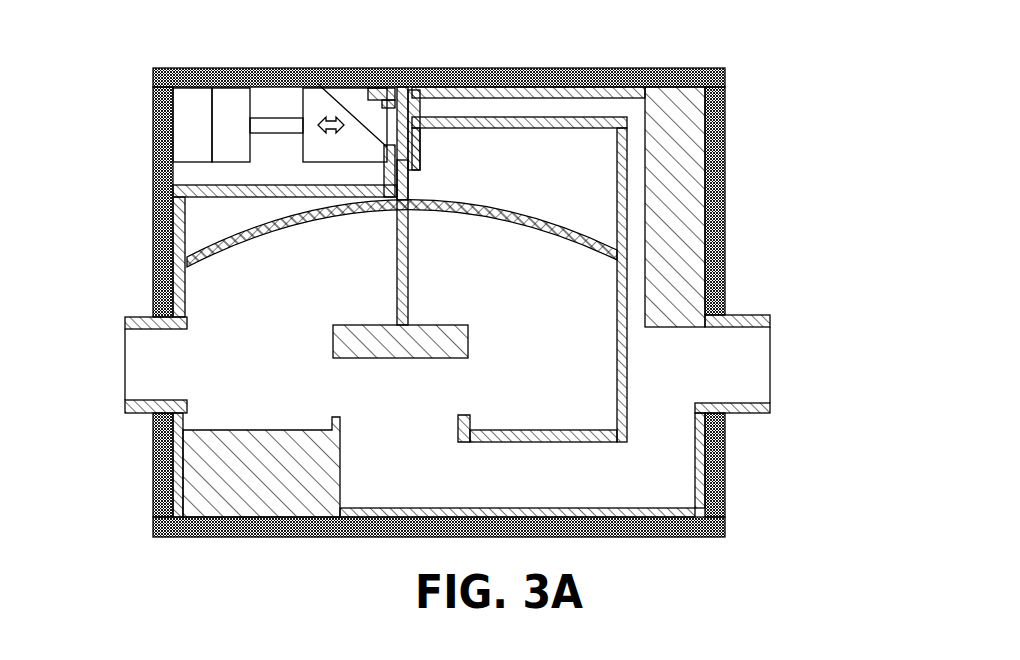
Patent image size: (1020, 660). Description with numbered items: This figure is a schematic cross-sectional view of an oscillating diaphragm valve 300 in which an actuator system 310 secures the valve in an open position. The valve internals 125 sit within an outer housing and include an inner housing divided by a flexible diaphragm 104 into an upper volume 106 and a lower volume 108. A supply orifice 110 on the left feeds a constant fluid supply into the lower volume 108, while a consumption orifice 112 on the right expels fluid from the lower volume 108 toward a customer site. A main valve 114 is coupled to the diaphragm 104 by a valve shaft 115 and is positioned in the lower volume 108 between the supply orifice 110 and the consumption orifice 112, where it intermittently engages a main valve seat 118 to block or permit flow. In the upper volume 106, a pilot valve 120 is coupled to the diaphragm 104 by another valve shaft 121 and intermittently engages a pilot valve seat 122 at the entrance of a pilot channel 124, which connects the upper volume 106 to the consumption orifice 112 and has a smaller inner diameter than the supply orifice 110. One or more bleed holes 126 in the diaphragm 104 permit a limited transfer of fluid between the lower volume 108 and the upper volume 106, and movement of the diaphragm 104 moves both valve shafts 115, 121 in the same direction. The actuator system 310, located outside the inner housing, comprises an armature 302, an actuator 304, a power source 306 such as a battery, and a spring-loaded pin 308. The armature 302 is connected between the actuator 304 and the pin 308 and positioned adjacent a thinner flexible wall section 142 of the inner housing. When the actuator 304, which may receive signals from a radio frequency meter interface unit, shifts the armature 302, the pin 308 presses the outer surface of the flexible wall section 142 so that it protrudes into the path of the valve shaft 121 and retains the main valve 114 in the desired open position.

The valve assembly 300 is at (770, 36).
The pilot channel 124 is at (540, 98).
The valve internals 125 is at (192, 532).
The flexible wall section 142 is at (393, 175).
The supply orifice 110 is at (118, 373).
The consumption orifice 112 is at (780, 375).
The upper volume 106 is at (605, 216).
The lower volume 108 is at (347, 281).
The main valve seat 118 is at (450, 428).
The diaphragm 104 is at (187, 262).
The bleed hole 126 is at (256, 240).
The valve shaft 115 is at (408, 294).
The main valve 114 is at (333, 332).
The pilot valve seat 122 is at (418, 100).
The pilot valve 120 is at (410, 128).
The valve shaft 121 is at (408, 183).
The power source 306 is at (190, 98).
The actuator 304 is at (227, 93).
The armature 302 is at (287, 117).
The pin 308 is at (330, 88).
The actuator system 310 is at (355, 64).